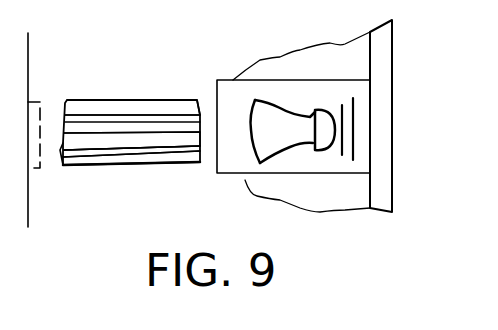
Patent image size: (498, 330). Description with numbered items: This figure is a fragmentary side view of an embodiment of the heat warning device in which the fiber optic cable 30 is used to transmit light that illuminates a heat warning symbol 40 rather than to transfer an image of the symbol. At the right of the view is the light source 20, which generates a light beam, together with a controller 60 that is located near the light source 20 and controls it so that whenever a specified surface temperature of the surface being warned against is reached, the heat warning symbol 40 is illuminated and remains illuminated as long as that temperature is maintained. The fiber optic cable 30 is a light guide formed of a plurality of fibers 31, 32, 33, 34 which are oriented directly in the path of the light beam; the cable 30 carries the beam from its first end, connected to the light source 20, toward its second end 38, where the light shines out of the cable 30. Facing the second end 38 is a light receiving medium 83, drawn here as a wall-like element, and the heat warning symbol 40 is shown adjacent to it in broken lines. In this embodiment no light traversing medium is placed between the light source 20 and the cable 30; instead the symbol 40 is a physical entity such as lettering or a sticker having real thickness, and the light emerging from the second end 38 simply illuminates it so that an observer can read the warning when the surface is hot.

The light receiving medium 83 is at (28, 50).
The heat warning symbol 40 is at (35, 98).
The fiber optic cable 30 is at (100, 117).
The fiber 31 is at (177, 115).
The fiber 32 is at (167, 127).
The fiber 33 is at (90, 138).
The fiber 34 is at (133, 153).
The second end 38 is at (65, 143).
The light source 20 is at (263, 135).
The controller 60 is at (362, 175).